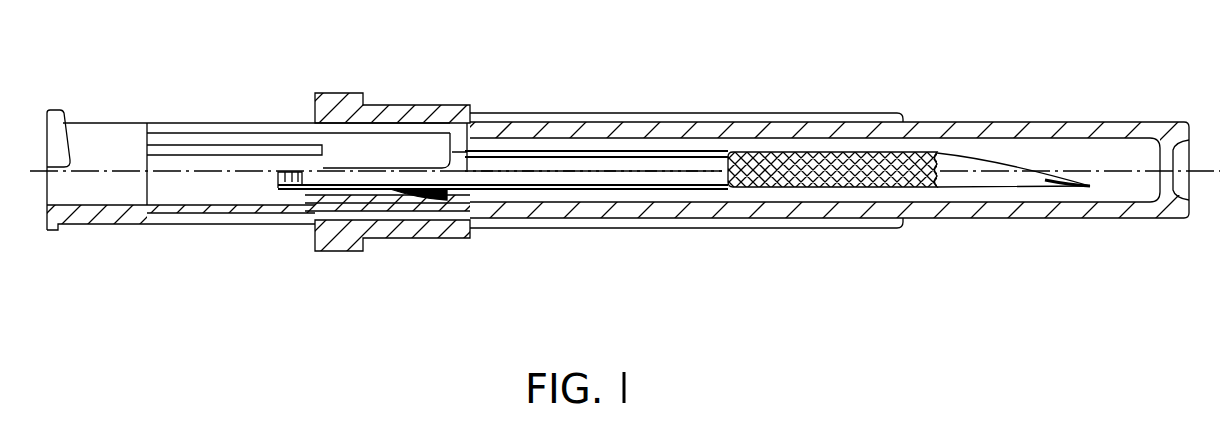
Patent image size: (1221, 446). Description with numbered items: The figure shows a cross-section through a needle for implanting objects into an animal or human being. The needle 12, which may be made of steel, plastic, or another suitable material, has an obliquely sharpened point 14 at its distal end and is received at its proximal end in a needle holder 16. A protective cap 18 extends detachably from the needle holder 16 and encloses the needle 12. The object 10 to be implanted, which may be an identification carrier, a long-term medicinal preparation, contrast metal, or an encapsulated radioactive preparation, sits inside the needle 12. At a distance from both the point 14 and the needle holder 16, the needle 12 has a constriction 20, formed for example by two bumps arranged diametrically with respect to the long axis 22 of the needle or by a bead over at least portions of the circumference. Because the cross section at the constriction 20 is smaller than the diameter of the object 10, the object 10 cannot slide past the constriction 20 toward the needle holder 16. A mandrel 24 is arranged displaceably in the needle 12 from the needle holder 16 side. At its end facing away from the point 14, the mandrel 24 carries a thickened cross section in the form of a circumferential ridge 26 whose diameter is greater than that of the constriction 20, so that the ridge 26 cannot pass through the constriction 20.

The object 10 is at (850, 152).
The needle 12 is at (575, 191).
The point 14 is at (975, 155).
The needle holder 16 is at (402, 147).
The protective cap 18 is at (655, 130).
The constriction 20 is at (688, 191).
The long axis 22 is at (1110, 158).
The mandrel 24 is at (497, 178).
The circumferential ridge 26 is at (297, 189).